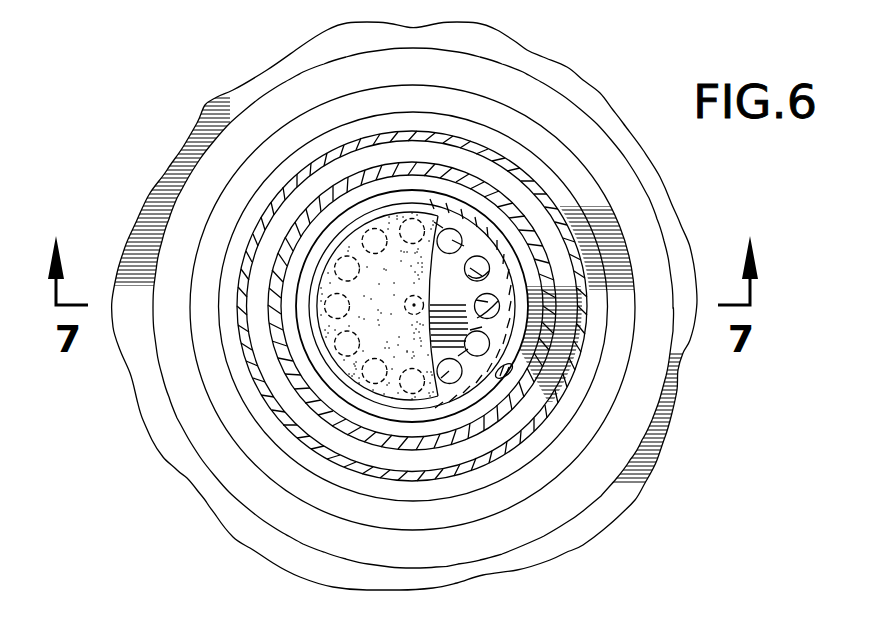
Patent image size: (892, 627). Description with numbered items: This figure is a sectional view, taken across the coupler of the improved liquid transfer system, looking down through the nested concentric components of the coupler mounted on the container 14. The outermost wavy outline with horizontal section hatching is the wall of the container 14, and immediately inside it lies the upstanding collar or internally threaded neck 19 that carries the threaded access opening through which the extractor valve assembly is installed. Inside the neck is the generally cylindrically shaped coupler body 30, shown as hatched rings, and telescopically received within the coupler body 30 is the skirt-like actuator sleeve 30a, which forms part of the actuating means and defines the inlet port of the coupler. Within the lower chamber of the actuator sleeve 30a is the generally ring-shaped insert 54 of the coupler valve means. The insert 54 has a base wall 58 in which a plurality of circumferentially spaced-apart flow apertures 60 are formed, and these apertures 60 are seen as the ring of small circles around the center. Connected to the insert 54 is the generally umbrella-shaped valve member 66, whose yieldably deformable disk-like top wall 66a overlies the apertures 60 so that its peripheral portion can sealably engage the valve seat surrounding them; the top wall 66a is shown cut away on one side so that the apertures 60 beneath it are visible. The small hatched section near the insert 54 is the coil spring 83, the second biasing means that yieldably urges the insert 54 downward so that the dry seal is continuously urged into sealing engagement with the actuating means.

The container 14 is at (210, 134).
The internally threaded neck 19 is at (290, 107).
The coupler body 30 is at (413, 127).
The actuator sleeve 30a is at (413, 483).
The ring-shaped insert 54 is at (493, 230).
The base wall 58 is at (460, 290).
The flow apertures 60 is at (326, 305).
The umbrella-shaped valve member 66 is at (371, 331).
The disk-like top wall 66a is at (355, 250).
The coil spring 83 is at (512, 373).